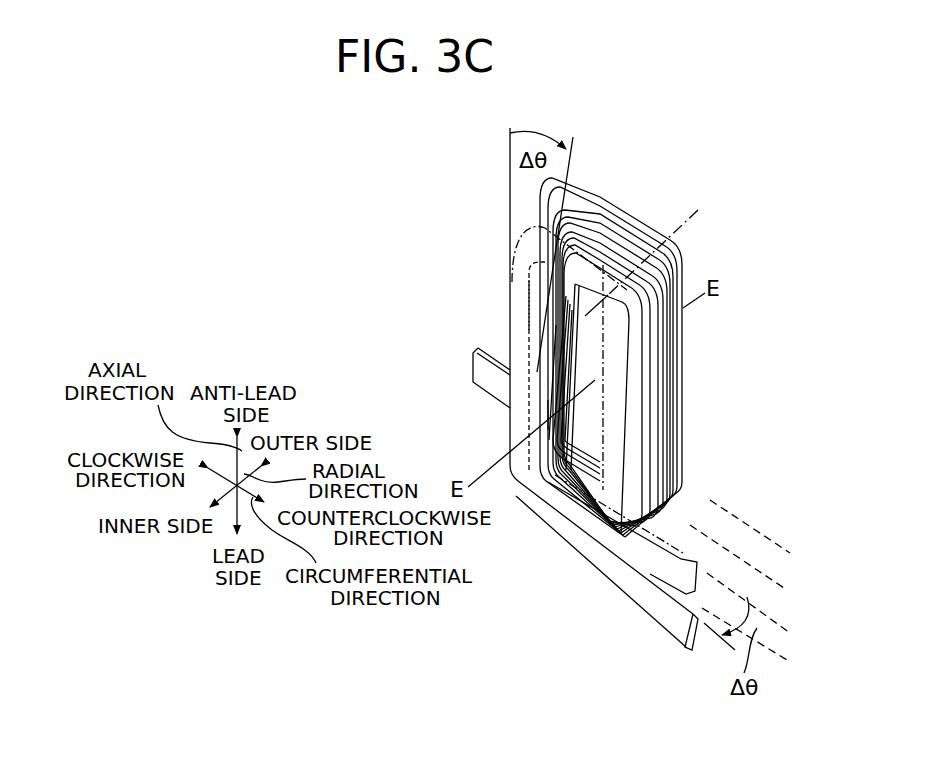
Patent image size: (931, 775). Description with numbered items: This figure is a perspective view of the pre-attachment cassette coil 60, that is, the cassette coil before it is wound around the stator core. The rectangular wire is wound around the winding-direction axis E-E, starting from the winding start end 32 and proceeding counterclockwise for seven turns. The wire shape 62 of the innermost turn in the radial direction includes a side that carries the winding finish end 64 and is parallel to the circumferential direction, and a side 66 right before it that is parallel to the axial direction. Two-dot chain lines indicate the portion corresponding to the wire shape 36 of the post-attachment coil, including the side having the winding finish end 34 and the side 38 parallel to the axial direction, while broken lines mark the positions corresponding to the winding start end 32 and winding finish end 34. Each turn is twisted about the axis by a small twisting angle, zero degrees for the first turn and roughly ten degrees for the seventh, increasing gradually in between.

The winding start end 32 is at (478, 368).
The winding finish end 34 is at (668, 572).
The wire shape 36 is at (518, 272).
The side 38 is at (515, 332).
The pre-attachment cassette coil 60 is at (606, 357).
The wire shape 62 is at (633, 352).
The winding finish end 64 is at (684, 632).
The side 66 is at (530, 429).